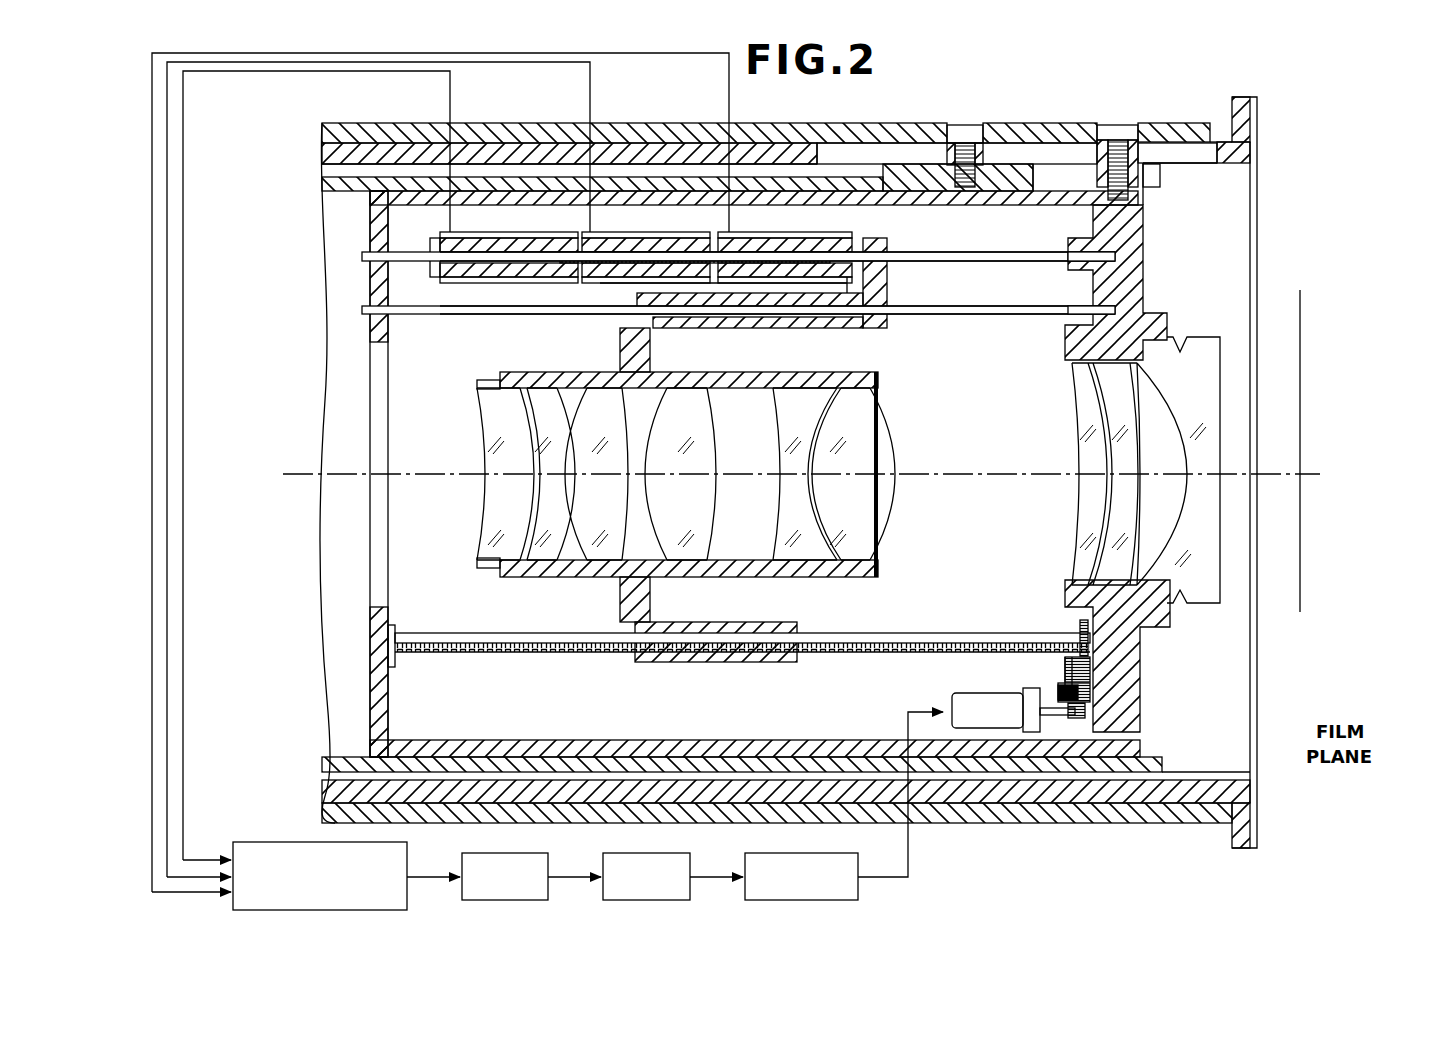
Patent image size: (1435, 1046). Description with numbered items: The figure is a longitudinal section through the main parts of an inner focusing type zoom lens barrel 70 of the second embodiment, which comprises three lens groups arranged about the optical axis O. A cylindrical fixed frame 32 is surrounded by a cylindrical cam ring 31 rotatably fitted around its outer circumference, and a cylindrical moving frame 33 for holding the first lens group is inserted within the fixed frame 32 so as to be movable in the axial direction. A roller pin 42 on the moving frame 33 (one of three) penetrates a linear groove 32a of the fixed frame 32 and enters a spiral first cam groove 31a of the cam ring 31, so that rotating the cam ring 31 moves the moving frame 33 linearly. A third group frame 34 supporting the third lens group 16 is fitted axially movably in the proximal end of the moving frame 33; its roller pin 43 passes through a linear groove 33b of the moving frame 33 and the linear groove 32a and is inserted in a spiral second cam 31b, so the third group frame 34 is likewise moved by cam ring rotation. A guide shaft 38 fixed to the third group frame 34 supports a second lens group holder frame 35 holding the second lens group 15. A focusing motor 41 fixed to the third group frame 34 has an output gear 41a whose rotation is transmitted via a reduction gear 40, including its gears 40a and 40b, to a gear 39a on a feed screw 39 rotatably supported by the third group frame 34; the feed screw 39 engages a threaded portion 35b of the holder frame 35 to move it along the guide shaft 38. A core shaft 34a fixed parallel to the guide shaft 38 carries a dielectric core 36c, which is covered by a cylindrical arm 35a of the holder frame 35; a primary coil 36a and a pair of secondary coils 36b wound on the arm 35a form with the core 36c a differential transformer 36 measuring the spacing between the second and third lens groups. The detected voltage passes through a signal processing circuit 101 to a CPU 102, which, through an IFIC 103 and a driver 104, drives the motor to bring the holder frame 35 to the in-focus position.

The cam ring 31 is at (345, 136).
The fixed frame 32 is at (462, 148).
The linear groove 32a is at (845, 152).
The moving frame 33 is at (556, 185).
The linear groove 33b is at (1160, 179).
The first cam groove 31a is at (967, 150).
The second cam 31b is at (1111, 126).
The roller pin 42 is at (1008, 124).
The roller pin 43 is at (1142, 152).
The zoom lens barrel 70 is at (1266, 246).
The third group frame 34 is at (1130, 238).
The core shaft 34a is at (997, 256).
The guide shaft 38 is at (983, 315).
The second lens group holder frame 35 is at (880, 572).
The cylindrical arm 35a is at (430, 268).
The threaded portion 35b is at (733, 663).
The differential transformer 36 is at (600, 183).
The primary coil 36a is at (612, 232).
The secondary coil 36b is at (510, 232).
The dielectric core 36c is at (820, 262).
The optical axis O is at (316, 472).
The second lens group 15 is at (897, 457).
The third lens group 16 is at (1070, 450).
The feed screw 39 is at (840, 633).
The gear 39a is at (1078, 622).
The reduction gear 40 is at (1182, 686).
The gear 40a is at (1092, 662).
The gear 40b is at (1092, 690).
The focusing motor 41 is at (970, 705).
The output gear 41a is at (1135, 709).
The signal processing circuit 101 is at (265, 842).
The CPU 102 is at (483, 853).
The IFIC 103 is at (615, 853).
The driver 104 is at (757, 853).